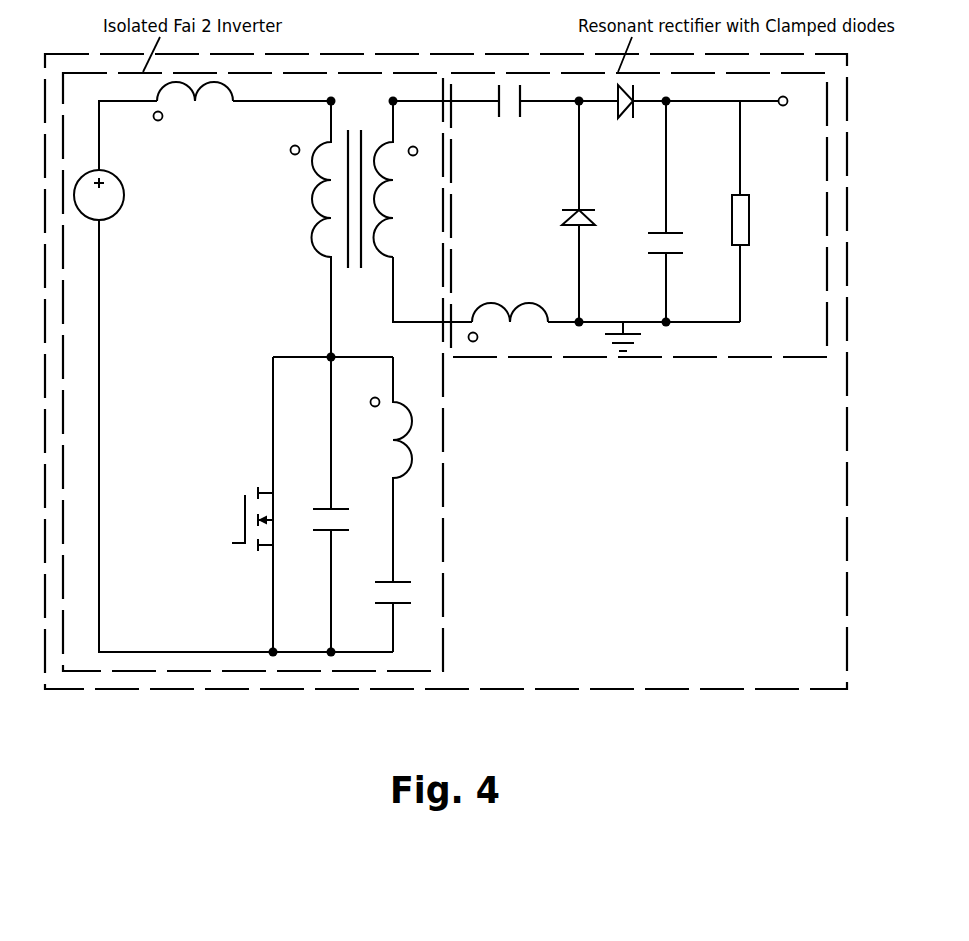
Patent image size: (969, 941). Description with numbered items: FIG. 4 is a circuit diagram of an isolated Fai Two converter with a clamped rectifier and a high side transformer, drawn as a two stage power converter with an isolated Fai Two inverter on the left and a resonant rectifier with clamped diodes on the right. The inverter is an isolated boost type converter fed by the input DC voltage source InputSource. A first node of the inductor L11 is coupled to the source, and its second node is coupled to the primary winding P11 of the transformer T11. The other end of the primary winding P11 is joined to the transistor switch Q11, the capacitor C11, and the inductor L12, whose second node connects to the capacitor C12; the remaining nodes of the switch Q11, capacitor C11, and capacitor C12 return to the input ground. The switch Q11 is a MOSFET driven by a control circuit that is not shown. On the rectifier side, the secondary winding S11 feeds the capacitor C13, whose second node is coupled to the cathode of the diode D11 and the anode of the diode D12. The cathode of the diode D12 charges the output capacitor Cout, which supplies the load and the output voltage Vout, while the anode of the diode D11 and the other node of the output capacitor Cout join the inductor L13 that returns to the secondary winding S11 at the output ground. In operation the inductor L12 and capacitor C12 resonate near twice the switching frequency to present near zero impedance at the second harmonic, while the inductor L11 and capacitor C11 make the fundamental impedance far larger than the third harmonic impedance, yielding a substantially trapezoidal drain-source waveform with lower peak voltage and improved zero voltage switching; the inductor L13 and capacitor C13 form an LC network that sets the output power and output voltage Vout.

The input DC voltage source InputSource is at (124, 215).
The inductor L11 is at (194, 108).
The transformer T11 is at (358, 229).
The primary winding P11 is at (303, 229).
The secondary winding S11 is at (404, 179).
The capacitor C13 is at (510, 113).
The diode D12 is at (626, 114).
The diode D11 is at (595, 211).
The output capacitor Cout is at (684, 211).
The output voltage Vout is at (775, 116).
The inductor L13 is at (509, 328).
The inductor L12 is at (404, 469).
The capacitor C12 is at (407, 604).
The capacitor C11 is at (346, 504).
The transistor switch Q11 is at (246, 504).